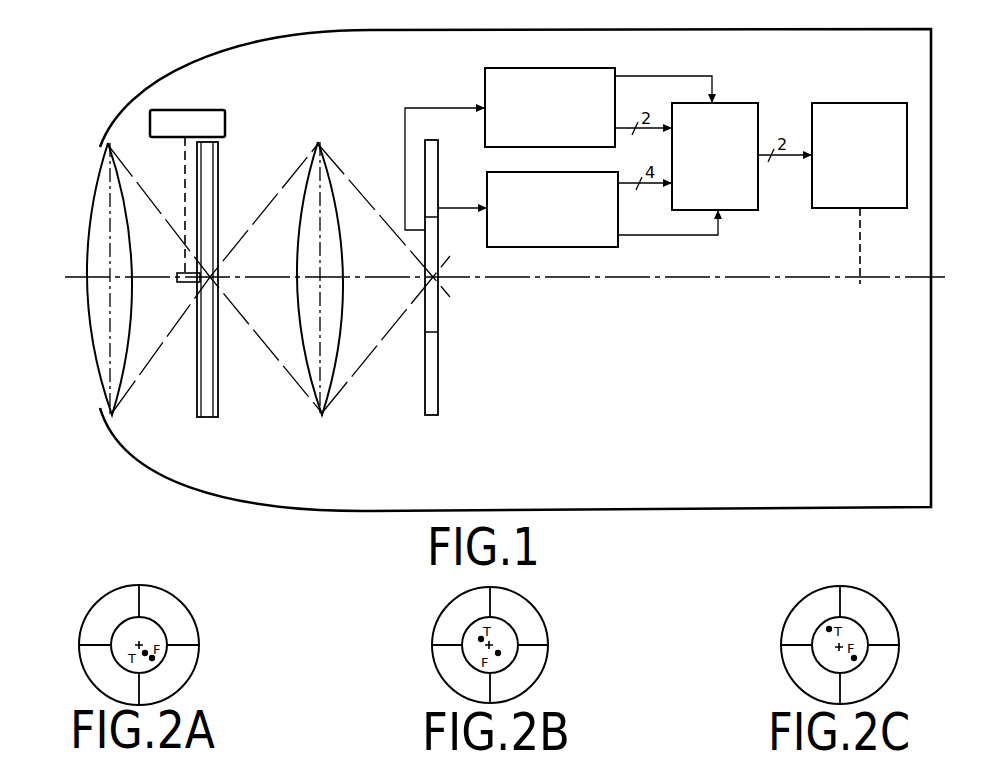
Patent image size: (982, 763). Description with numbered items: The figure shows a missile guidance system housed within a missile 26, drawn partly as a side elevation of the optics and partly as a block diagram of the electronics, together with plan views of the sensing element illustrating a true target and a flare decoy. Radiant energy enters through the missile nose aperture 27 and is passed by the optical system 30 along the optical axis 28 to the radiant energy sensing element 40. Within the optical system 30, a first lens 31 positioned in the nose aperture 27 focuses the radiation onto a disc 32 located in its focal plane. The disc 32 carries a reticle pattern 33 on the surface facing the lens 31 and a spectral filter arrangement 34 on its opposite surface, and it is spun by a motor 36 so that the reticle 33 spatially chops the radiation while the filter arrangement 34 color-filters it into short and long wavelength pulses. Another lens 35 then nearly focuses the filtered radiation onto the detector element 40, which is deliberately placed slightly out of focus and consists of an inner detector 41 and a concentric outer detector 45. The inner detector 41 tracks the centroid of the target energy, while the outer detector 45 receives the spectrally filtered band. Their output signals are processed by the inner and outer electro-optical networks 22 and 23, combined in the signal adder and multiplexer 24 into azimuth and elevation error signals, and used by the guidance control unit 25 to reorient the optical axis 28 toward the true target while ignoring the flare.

The inner electro-optical network 22 is at (607, 67).
The outer electro-optical network 23 is at (607, 172).
The signal adder and multiplexer 24 is at (743, 101).
The guidance control unit 25 is at (883, 101).
The missile 26 is at (847, 28).
The missile nose aperture 27 is at (93, 153).
The optical axis 28 is at (142, 278).
The optical system 30 is at (320, 143).
The first lens 31 is at (132, 245).
The disc 32 is at (218, 417).
The reticle pattern 33 is at (197, 396).
The spectral filter arrangement 34 is at (218, 175).
The second lens 35 is at (343, 247).
The motor 36 is at (220, 110).
The radiant energy sensing element 40 is at (438, 417).
The inner detector 41 is at (440, 314).
The outer detector 45 is at (440, 382).